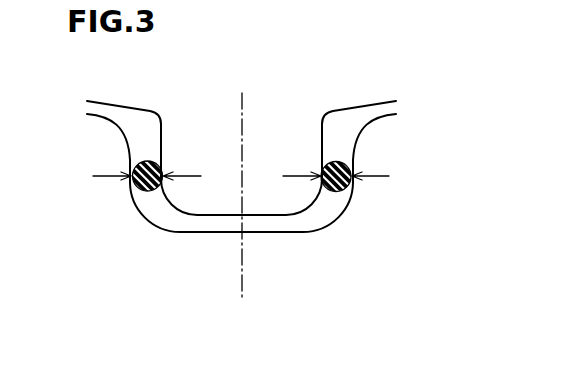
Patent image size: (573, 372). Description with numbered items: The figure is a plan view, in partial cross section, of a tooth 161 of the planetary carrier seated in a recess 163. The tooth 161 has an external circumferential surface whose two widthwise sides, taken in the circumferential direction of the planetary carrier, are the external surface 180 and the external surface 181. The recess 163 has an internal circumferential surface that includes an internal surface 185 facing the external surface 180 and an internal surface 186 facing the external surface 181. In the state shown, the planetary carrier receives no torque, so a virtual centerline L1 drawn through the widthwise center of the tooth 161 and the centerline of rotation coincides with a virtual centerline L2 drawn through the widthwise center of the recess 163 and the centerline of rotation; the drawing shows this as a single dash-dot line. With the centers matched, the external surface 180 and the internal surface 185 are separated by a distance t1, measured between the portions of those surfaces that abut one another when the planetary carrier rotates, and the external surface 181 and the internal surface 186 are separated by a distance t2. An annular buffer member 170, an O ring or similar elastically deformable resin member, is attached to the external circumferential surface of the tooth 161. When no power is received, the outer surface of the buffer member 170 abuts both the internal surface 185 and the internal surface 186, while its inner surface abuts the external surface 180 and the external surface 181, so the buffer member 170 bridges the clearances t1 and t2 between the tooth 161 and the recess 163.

The tooth 161 is at (287, 202).
The recess 163 is at (201, 232).
The buffer member 170 is at (336, 191).
The external surface 180 is at (156, 126).
The external surface 181 is at (327, 126).
The internal surface 185 is at (134, 154).
The internal surface 186 is at (349, 155).
The distance t1 is at (103, 180).
The distance t2 is at (378, 182).
The virtual centerline L1 is at (258, 178).
The virtual centerline L2 is at (242, 130).